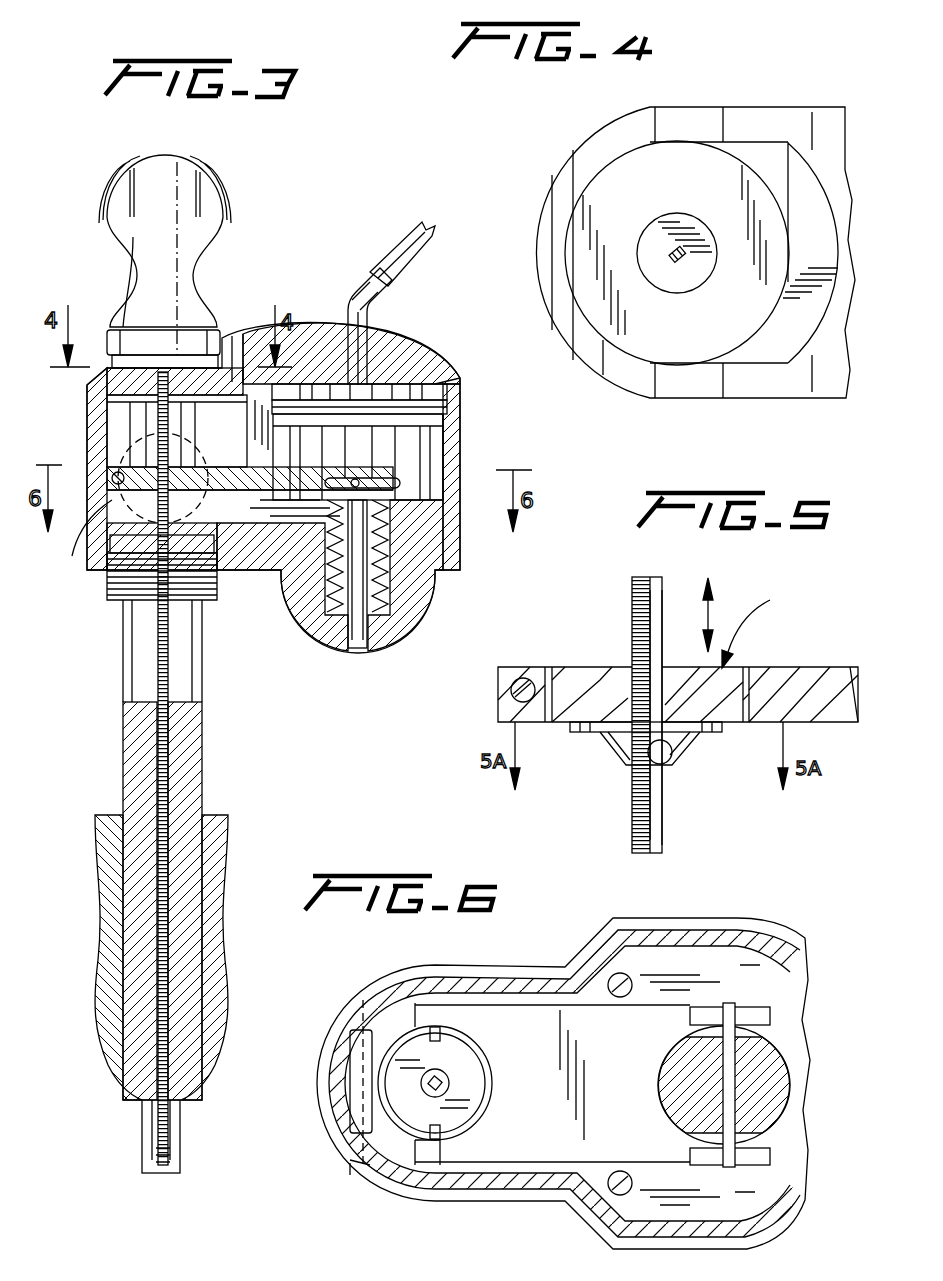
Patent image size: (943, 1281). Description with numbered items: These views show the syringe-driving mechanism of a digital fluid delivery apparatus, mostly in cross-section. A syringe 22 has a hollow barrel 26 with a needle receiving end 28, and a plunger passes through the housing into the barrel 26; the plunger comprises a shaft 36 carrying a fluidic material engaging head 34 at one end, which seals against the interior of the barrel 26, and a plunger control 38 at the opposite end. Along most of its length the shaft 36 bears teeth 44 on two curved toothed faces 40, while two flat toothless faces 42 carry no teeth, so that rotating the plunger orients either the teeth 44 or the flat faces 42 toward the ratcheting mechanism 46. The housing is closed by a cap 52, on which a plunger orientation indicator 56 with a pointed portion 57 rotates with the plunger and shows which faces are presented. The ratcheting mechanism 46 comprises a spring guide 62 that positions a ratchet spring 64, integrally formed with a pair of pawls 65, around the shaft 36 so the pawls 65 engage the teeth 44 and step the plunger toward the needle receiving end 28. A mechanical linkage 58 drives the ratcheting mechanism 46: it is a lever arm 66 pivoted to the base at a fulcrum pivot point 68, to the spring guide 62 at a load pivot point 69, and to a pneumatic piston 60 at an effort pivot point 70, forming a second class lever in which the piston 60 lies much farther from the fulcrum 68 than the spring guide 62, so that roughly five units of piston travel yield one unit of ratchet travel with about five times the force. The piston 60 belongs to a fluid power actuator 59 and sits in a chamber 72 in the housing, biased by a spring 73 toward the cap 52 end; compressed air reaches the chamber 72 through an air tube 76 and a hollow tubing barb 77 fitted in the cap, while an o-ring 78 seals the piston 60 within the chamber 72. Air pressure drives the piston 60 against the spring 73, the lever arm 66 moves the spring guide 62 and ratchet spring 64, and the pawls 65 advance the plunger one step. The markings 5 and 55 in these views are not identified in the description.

In FIG. 3, the plunger control 38 is at (148, 178).
In FIG. 3, the air tube 76 is at (413, 233).
In FIG. 3, the hollow tubing barb 77 is at (362, 282).
In FIG. 3, the fluid power actuator 59 is at (392, 368).
In FIG. 3, the pneumatic piston 60 is at (418, 393).
In FIG. 6, the pneumatic piston 60 is at (762, 1050).
In FIG. 3, the o-ring 78 is at (449, 407).
In FIG. 3, the chamber 72 is at (440, 455).
In FIG. 3, the pivot point (effort) 70 is at (360, 487).
In FIG. 6, the pivot point (effort) 70 is at (738, 1115).
In FIG. 3, the spring 73 is at (368, 600).
In FIG. 3, the lever arm 66 is at (265, 492).
In FIG. 5, the lever arm 66 is at (820, 682).
In FIG. 6, the lever arm 66 is at (563, 1028).
In FIG. 3, the shaft 36 is at (110, 402).
In FIG. 4, the shaft 36 is at (670, 256).
In FIG. 6, the shaft 36 is at (428, 1087).
In FIG. 3, the spring guide 62 is at (118, 468).
In FIG. 5, the spring guide 62 is at (728, 685).
In FIG. 6, the spring guide 62 is at (375, 1045).
In FIG. 3, the pivot point (fulcrum) 68 is at (114, 474).
In FIG. 5, the pivot point (fulcrum) 68 is at (512, 698).
In FIG. 6, the pivot point (fulcrum) 68 is at (360, 1165).
In FIG. 3, the section line 5 is at (85, 542).
In FIG. 3, the syringe 22 is at (210, 690).
In FIG. 3, the hollow barrel 26 is at (198, 770).
In FIG. 3, the needle receiving end 28 is at (178, 1128).
In FIG. 3, the fluidic material engaging head 34 is at (163, 1168).
In FIG. 4, the bore 55 is at (670, 250).
In FIG. 4, the plunger orientation indicator 56 is at (697, 170).
In FIG. 4, the cap 52 is at (762, 118).
In FIG. 4, the pointed portion 57 is at (786, 158).
In FIG. 5, the toothed faces 40 is at (633, 598).
In FIG. 5, the toothless faces 42 is at (656, 636).
In FIG. 5, the teeth 44 is at (633, 641).
In FIG. 5, the ratcheting mechanism 46 is at (751, 623).
In FIG. 5, the ratchet spring 64 is at (688, 735).
In FIG. 6, the ratchet spring 64 is at (428, 1068).
In FIG. 5, the pawls 65 is at (614, 742).
In FIG. 6, the mechanical linkage 58 is at (479, 992).
In FIG. 6, the pivot point (load) 69 is at (437, 1168).